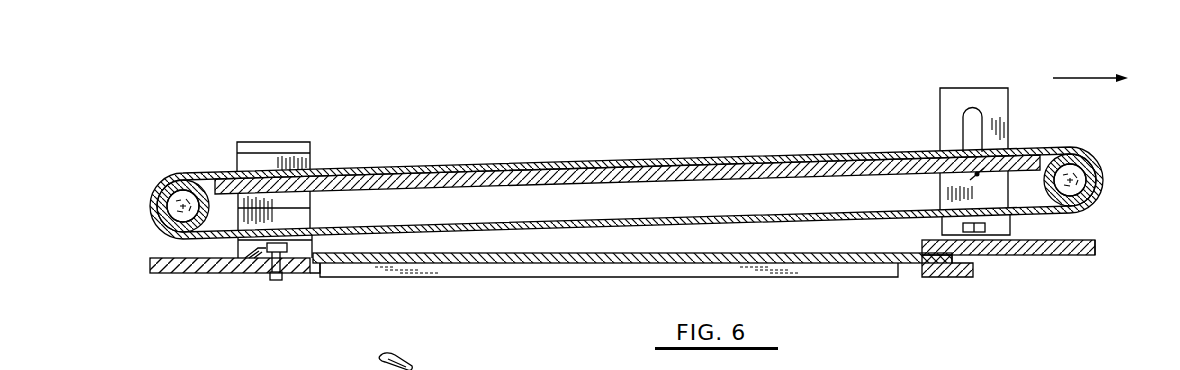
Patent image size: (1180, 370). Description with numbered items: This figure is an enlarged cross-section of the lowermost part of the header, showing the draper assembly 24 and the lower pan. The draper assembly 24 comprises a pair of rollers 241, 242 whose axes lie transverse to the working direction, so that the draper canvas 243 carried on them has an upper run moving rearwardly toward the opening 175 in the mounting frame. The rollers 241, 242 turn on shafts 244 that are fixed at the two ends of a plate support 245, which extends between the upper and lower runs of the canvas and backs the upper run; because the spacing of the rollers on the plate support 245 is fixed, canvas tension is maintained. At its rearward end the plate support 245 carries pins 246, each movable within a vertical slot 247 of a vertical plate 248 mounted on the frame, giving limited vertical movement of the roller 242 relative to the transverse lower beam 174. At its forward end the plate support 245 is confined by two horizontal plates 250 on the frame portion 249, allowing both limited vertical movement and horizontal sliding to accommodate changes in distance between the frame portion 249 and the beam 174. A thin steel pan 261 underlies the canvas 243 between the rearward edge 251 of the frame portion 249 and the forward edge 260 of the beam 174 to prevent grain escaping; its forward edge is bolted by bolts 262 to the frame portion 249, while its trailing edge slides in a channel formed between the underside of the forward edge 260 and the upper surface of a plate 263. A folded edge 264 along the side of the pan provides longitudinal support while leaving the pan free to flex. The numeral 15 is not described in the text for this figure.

The draper assembly 24 is at (585, 121).
The transverse lower beam 174 is at (1050, 258).
The opening 175 is at (1114, 79).
The roller 241 is at (178, 184).
The roller 242 is at (1084, 157).
The draper canvas 243 is at (609, 152).
The shaft 244 is at (1100, 183).
The plate support 245 is at (643, 188).
The pin 246 is at (975, 173).
The vertical slot 247 is at (978, 118).
The vertical plate 248 is at (945, 96).
The frame portion 249 is at (239, 278).
The horizontal plate 250 is at (290, 144).
The rearward edge 251 is at (313, 277).
The forward edge 260 is at (918, 245).
The pan 261 is at (728, 248).
The bolt 262 is at (259, 248).
The plate 263 is at (949, 281).
The folded edge 264 is at (598, 278).
The frame (partial) 15 is at (431, 361).